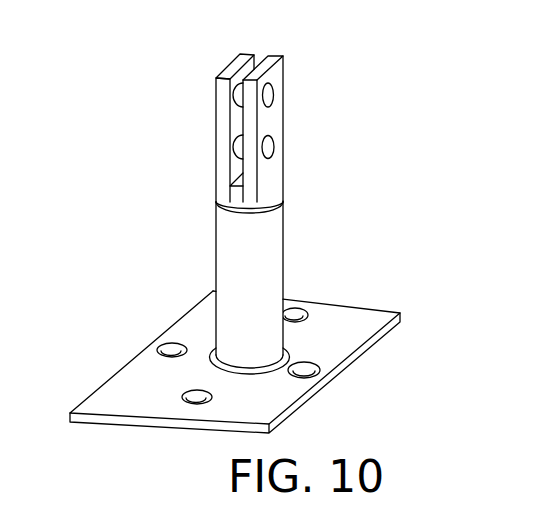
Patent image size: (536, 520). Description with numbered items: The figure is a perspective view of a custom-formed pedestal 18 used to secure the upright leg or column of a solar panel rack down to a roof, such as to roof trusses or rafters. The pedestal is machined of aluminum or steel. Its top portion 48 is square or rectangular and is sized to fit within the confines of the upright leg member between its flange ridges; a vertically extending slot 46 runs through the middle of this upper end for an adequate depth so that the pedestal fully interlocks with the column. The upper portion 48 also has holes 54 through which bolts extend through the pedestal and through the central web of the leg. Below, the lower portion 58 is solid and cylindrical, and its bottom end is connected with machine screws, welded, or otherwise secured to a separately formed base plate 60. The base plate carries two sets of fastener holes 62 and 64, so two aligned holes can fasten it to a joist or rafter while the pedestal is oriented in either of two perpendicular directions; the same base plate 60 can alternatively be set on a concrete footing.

The pedestal 18 is at (391, 219).
The slot 46 is at (257, 60).
The top portion 48 is at (278, 118).
The holes 54 is at (270, 148).
The lower portion 58 is at (270, 254).
The base plate 60 is at (384, 320).
The fastener holes 62 is at (300, 308).
The fastener holes 64 is at (170, 347).